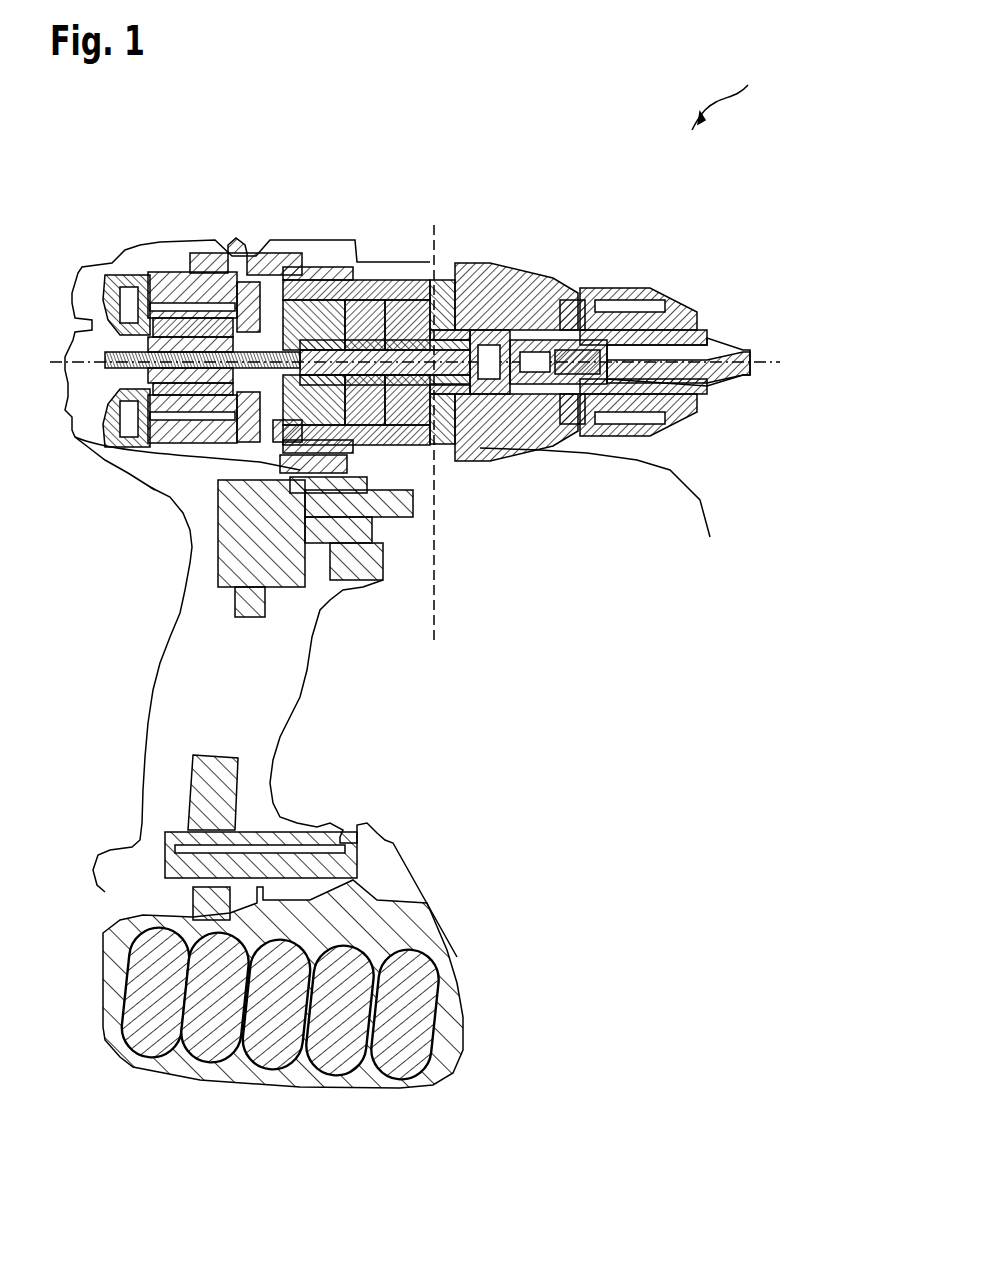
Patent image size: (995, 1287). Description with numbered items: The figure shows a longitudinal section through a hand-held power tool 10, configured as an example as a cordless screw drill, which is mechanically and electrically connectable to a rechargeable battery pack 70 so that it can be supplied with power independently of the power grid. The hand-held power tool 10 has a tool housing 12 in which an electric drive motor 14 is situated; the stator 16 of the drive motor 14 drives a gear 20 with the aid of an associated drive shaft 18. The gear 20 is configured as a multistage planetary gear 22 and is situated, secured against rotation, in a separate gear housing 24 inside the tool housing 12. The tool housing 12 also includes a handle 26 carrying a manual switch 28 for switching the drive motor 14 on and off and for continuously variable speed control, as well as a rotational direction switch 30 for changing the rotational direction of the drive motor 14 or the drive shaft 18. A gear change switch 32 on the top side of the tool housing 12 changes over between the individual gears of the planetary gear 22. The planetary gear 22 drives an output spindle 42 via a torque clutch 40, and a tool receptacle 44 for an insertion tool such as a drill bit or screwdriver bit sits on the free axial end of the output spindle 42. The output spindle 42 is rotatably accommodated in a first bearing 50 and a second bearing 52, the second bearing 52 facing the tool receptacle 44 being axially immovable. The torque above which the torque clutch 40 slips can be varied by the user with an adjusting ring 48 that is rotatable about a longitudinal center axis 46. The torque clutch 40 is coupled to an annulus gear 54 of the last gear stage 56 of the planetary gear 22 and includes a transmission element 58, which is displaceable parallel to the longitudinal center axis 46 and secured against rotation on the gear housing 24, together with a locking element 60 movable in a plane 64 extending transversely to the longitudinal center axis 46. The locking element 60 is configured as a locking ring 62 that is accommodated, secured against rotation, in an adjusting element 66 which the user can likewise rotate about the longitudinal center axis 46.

The hand-held power tool 10 is at (733, 92).
The tool housing 12 is at (88, 293).
The electric drive motor 14 is at (160, 280).
The stator 16 is at (130, 333).
The drive shaft 18 is at (180, 300).
The gear 20 is at (273, 313).
The multistage planetary gear 22 is at (150, 425).
The gear housing 24 is at (327, 323).
The handle 26 is at (175, 693).
The manual switch 28 is at (367, 555).
The rotational direction switch 30 is at (260, 462).
The gear change switch 32 is at (232, 252).
The torque clutch 40 is at (460, 265).
The output spindle 42 is at (553, 460).
The tool receptacle 44 is at (713, 360).
The longitudinal center axis 46 is at (615, 290).
The adjusting ring 48 is at (604, 508).
The first bearing 50 is at (442, 262).
The second bearing 52 is at (505, 275).
The annulus gear 54 is at (440, 460).
The last gear stage 56 is at (370, 270).
The transmission element 58 is at (420, 270).
The locking element 60 is at (445, 468).
The locking ring 62 is at (577, 362).
The plane 64 is at (438, 628).
The adjusting element 66 is at (392, 265).
The rechargeable battery pack 70 is at (283, 1057).